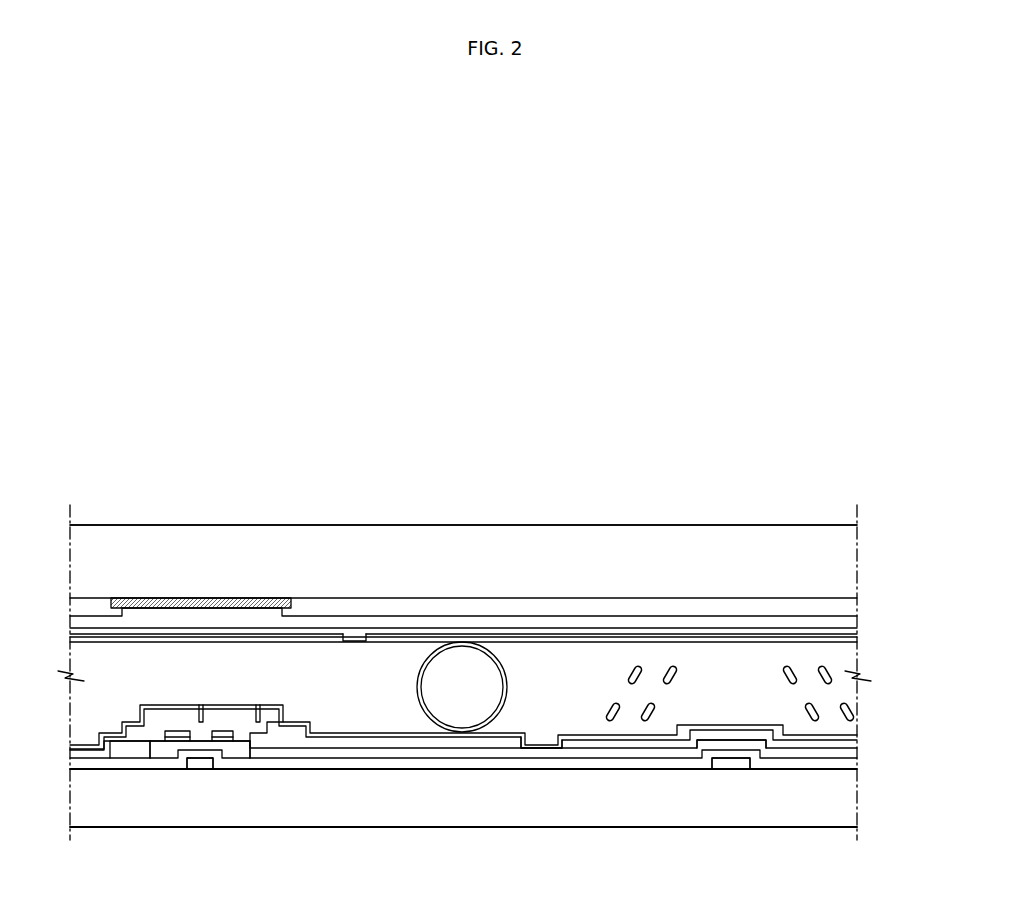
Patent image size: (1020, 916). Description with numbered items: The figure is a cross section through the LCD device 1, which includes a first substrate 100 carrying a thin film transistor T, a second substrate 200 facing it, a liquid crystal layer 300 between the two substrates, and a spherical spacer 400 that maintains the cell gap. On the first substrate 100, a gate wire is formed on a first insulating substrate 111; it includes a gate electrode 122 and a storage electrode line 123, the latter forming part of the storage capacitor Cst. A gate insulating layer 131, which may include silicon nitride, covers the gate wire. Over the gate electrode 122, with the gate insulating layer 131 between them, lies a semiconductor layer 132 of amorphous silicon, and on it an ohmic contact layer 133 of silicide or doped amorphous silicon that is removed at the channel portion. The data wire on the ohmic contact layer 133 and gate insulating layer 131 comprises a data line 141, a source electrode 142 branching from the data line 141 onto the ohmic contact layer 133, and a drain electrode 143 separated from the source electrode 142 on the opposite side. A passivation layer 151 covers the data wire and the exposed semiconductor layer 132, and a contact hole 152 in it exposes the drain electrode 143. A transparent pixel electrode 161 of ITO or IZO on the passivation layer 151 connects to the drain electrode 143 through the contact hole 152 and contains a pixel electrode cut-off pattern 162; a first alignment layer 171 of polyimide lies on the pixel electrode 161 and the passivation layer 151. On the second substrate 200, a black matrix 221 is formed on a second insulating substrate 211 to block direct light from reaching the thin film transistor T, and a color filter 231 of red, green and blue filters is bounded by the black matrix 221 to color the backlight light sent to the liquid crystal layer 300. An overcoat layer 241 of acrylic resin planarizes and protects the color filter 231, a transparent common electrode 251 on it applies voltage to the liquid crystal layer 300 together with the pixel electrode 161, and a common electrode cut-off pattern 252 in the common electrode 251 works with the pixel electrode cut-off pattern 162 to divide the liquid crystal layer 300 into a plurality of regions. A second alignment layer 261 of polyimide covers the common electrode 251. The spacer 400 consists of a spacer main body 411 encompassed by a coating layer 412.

The LCD device 1 is at (147, 400).
The first substrate 100 is at (868, 735).
The first insulating substrate 111 is at (460, 805).
The gate electrode 122 is at (203, 764).
The storage electrode line 123 is at (733, 765).
The gate insulating layer 131 is at (330, 760).
The semiconductor layer 132 is at (168, 760).
The ohmic contact layer 133 is at (246, 752).
The data line 141 is at (120, 753).
The source electrode 142 is at (146, 744).
The drain electrode 143 is at (272, 745).
The passivation layer 151 is at (372, 752).
The contact hole 152 is at (290, 728).
The pixel electrode 161 is at (518, 742).
The pixel electrode cut-off pattern 162 is at (548, 752).
The first alignment layer 171 is at (628, 745).
The storage capacitor Cst is at (721, 742).
The thin film transistor T is at (287, 870).
The second substrate 200 is at (868, 525).
The second insulating substrate 211 is at (767, 548).
The black matrix 221 is at (262, 605).
The color filter 231 is at (370, 603).
The overcoat layer 241 is at (142, 622).
The common electrode 251 is at (697, 633).
The common electrode cut-off pattern 252 is at (370, 629).
The second alignment layer 261 is at (623, 642).
The liquid crystal layer 300 is at (822, 705).
The spacer 400 is at (491, 573).
The spacer main body 411 is at (503, 676).
The coating layer 412 is at (465, 647).